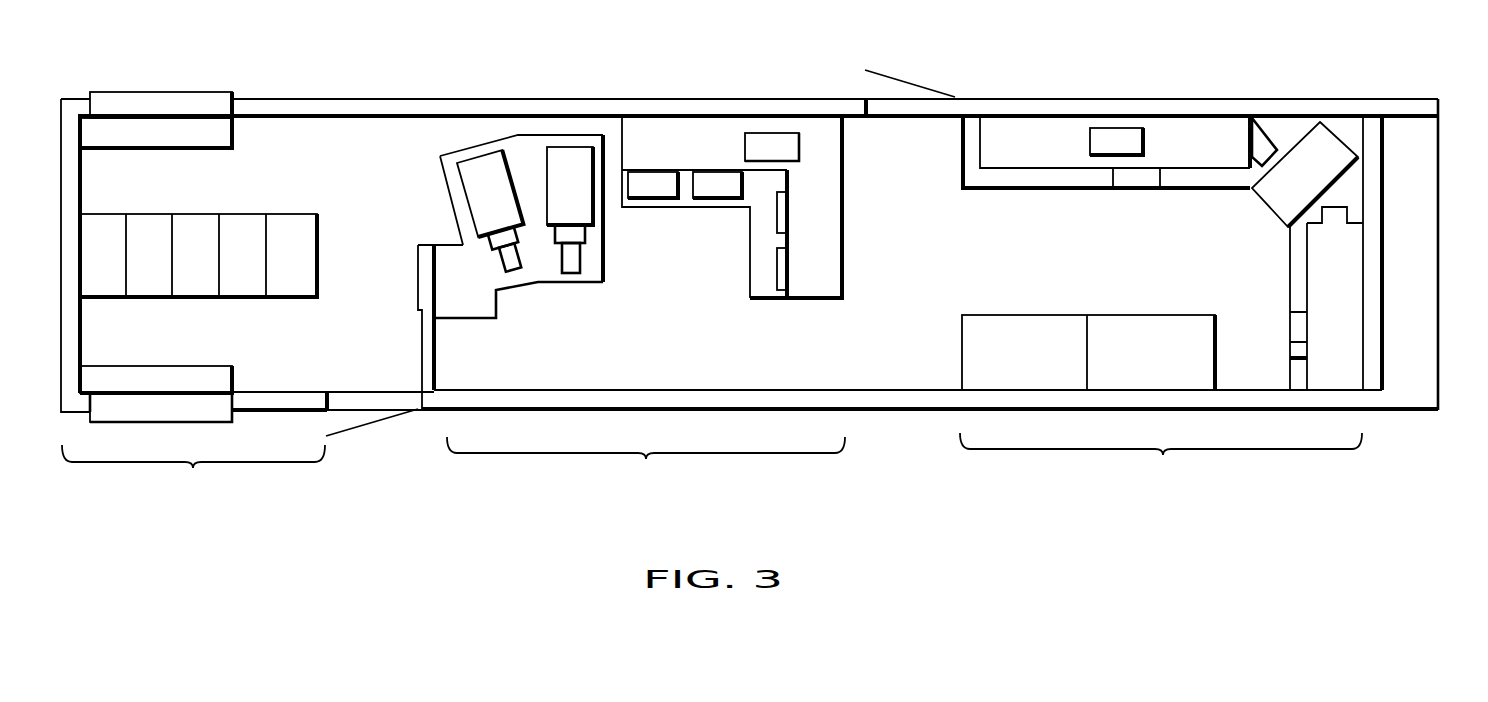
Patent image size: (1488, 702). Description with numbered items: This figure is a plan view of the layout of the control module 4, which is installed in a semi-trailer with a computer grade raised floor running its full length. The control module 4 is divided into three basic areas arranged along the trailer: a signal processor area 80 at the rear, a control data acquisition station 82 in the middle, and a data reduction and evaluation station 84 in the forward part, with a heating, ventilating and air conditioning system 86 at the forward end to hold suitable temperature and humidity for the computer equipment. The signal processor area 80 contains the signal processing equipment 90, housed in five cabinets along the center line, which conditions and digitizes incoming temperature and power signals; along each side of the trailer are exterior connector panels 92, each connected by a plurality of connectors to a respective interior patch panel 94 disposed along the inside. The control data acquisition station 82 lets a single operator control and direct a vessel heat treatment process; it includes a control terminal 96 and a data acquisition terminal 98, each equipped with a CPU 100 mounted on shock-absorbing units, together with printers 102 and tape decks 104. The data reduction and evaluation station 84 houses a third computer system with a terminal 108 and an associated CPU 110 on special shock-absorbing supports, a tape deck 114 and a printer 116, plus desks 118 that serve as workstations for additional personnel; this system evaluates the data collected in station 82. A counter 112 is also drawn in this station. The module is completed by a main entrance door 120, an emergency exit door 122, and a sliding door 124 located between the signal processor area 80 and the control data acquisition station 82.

The control module 4 is at (749, 221).
The signal processor area 80 is at (193, 473).
The control data acquisition station 82 is at (646, 464).
The data reduction and evaluation station 84 is at (1161, 463).
The heating, ventilating and air conditioning system 86 is at (1413, 190).
The signal processing equipment 90 is at (198, 217).
The exterior connector panels 92 is at (153, 103).
The interior patch panels 94 is at (187, 133).
The control terminal 96 is at (490, 213).
The data acquisition terminal 98 is at (587, 207).
The CPU 100 is at (755, 143).
The printers 102 is at (728, 188).
The tape decks 104 is at (778, 213).
The terminal 108 is at (1290, 183).
The CPU 110 is at (1110, 140).
The counter 112 is at (1147, 180).
The tape deck 114 is at (1267, 143).
The printer 116 is at (1300, 343).
The desks 118 is at (1047, 367).
The main entrance door 120 is at (898, 77).
The emergency exit door 122 is at (357, 425).
The sliding door 124 is at (427, 365).